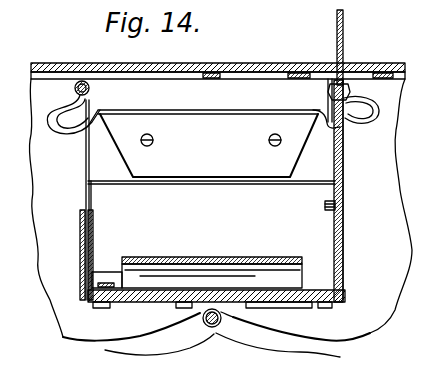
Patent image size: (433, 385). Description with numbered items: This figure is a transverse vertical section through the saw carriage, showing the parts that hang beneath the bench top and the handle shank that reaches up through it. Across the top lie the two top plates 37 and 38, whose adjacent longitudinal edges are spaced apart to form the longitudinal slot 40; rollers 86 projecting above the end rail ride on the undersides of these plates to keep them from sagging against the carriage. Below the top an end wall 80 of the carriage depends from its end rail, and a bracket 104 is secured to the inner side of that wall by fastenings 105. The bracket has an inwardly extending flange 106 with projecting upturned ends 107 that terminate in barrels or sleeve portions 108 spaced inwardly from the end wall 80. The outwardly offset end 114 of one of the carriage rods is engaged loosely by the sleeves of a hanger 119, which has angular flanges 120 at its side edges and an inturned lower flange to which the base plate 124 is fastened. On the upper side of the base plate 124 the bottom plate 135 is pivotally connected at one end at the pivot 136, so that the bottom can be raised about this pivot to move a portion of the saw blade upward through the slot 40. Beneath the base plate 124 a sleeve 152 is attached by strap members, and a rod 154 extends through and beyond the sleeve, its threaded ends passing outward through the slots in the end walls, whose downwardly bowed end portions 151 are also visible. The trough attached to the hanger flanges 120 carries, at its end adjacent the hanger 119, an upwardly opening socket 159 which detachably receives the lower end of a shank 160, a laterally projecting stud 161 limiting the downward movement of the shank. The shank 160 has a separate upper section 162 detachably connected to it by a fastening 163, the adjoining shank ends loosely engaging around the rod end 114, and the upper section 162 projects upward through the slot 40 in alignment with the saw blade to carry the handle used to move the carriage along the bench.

The top plate 37 is at (50, 63).
The top plate 38 is at (401, 64).
The longitudinal slot 40 is at (326, 63).
The end wall 80 is at (370, 323).
The roller 86 is at (213, 66).
The bracket 104 is at (267, 139).
The fastenings 105 is at (153, 143).
The flange 106 is at (197, 110).
The upturned ends 107 is at (62, 104).
The barrel or sleeve portion 108 is at (81, 79).
The offset rod end 114 is at (90, 87).
The hanger 119 is at (100, 178).
The angular flange 120 is at (88, 199).
The base plate 124 is at (160, 302).
The bottom plate 135 is at (183, 260).
The pivot 136 is at (117, 270).
The bowed end portion 151 is at (110, 347).
The sleeve 152 is at (230, 326).
The rod 154 is at (243, 320).
The socket 159 is at (80, 253).
The shank 160 is at (340, 192).
The stud 161 is at (323, 210).
The upper shank section 162 is at (345, 43).
The fastening 163 is at (362, 103).